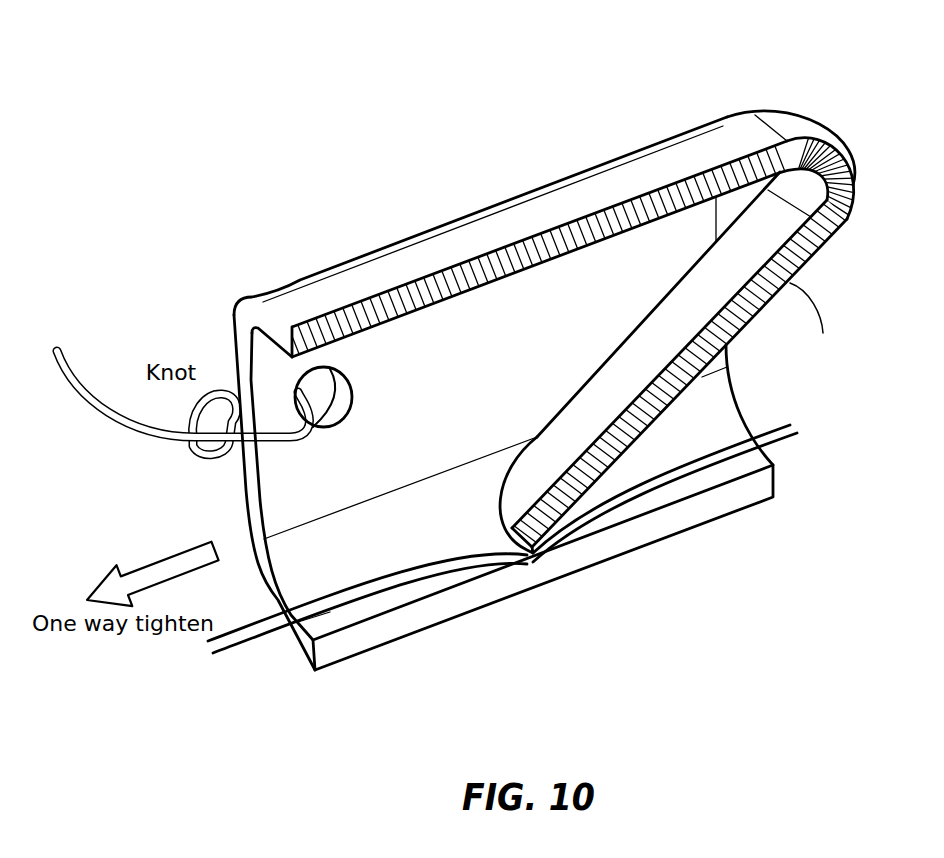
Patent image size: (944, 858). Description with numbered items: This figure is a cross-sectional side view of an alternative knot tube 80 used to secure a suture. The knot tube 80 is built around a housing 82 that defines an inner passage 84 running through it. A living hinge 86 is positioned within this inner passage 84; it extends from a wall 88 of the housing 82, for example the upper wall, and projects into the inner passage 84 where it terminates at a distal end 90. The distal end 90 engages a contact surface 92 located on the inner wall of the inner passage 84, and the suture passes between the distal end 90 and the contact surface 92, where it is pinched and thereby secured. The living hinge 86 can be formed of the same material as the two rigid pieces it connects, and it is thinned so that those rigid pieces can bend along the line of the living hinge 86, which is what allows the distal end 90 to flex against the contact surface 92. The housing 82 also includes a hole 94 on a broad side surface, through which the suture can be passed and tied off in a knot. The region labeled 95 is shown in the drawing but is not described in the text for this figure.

The knot tube 80 is at (383, 153).
The housing 82 is at (327, 658).
The inner passage 84 is at (317, 478).
The living hinge 86 is at (818, 127).
The wall 88 is at (340, 270).
The distal end 90 is at (533, 557).
The contact surface 92 is at (300, 617).
The hole 94 is at (318, 387).
The back plate 95 is at (557, 309).